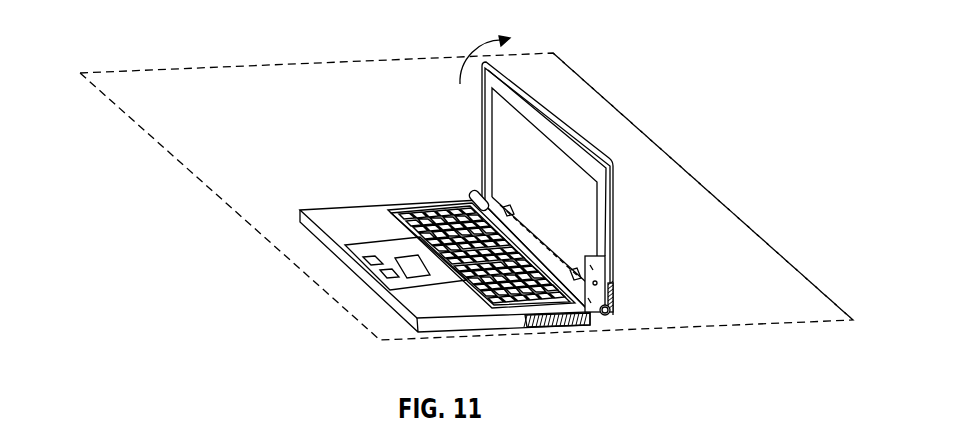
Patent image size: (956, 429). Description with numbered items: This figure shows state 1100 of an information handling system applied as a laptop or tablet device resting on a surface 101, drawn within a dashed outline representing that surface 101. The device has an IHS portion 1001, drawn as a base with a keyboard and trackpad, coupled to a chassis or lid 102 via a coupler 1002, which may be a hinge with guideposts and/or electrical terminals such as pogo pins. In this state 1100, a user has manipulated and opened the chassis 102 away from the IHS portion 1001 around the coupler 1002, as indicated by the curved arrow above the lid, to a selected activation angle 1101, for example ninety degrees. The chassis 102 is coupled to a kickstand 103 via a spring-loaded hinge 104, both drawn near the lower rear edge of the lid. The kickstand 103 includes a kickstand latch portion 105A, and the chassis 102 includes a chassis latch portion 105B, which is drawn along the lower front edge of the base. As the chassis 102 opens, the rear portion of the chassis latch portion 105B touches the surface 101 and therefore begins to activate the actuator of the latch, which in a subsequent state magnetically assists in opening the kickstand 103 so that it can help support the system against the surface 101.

The state 1100 is at (124, 37).
The surface 101 is at (714, 210).
The chassis or lid 102 is at (574, 127).
The IHS portion 1001 is at (475, 323).
The coupler 1002 is at (473, 196).
The activation angle 1101 is at (587, 256).
The spring-loaded hinge 104 is at (613, 285).
The kickstand 103 is at (609, 299).
The kickstand latch portion 105A is at (610, 316).
The chassis latch portion 105B is at (605, 317).